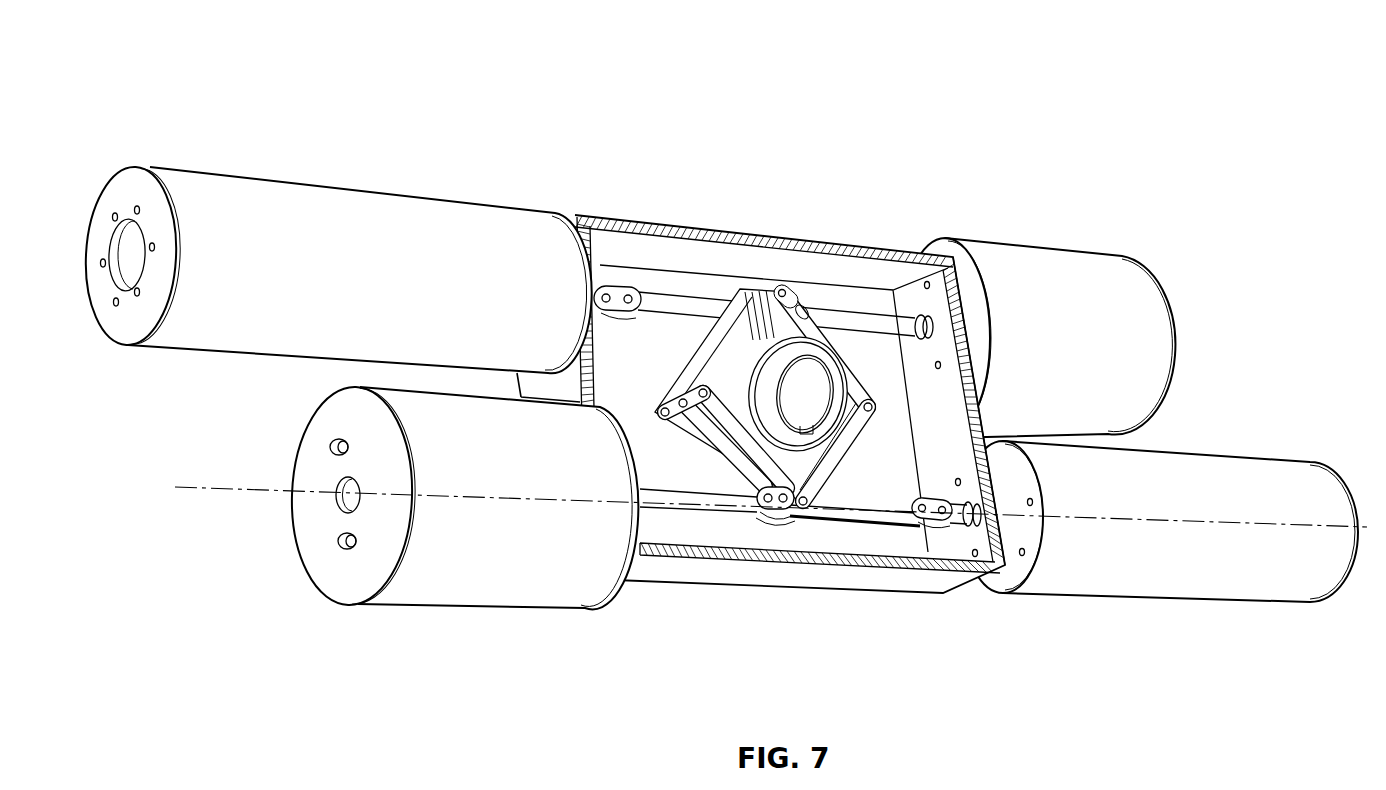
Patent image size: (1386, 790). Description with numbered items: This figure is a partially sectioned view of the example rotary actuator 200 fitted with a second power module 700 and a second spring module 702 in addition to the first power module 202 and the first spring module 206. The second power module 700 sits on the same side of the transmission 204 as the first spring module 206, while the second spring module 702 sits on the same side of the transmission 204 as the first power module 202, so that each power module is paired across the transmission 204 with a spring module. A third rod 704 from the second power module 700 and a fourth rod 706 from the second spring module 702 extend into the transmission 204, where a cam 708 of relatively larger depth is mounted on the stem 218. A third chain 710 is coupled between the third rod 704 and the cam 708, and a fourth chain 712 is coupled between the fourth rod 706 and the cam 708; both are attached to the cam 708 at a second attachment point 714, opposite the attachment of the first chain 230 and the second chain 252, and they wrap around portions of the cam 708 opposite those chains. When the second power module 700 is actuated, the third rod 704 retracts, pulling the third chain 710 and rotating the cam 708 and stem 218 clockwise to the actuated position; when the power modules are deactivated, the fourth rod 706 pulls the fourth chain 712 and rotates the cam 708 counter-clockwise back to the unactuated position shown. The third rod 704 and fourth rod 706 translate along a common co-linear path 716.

The rotary actuator 200 is at (478, 65).
The first power module 202 is at (1053, 247).
The transmission 204 is at (633, 218).
The first spring module 206 is at (298, 183).
The stem 218 is at (808, 380).
The first chain 230 is at (694, 354).
The second chain 252 is at (688, 307).
The second power module 700 is at (495, 608).
The second spring module 702 is at (1198, 602).
The third rod 704 is at (675, 512).
The fourth rod 706 is at (963, 527).
The cam 708 is at (837, 433).
The third chain 710 is at (857, 430).
The fourth chain 712 is at (737, 457).
The second attachment point 714 is at (786, 289).
The path 716 is at (223, 490).